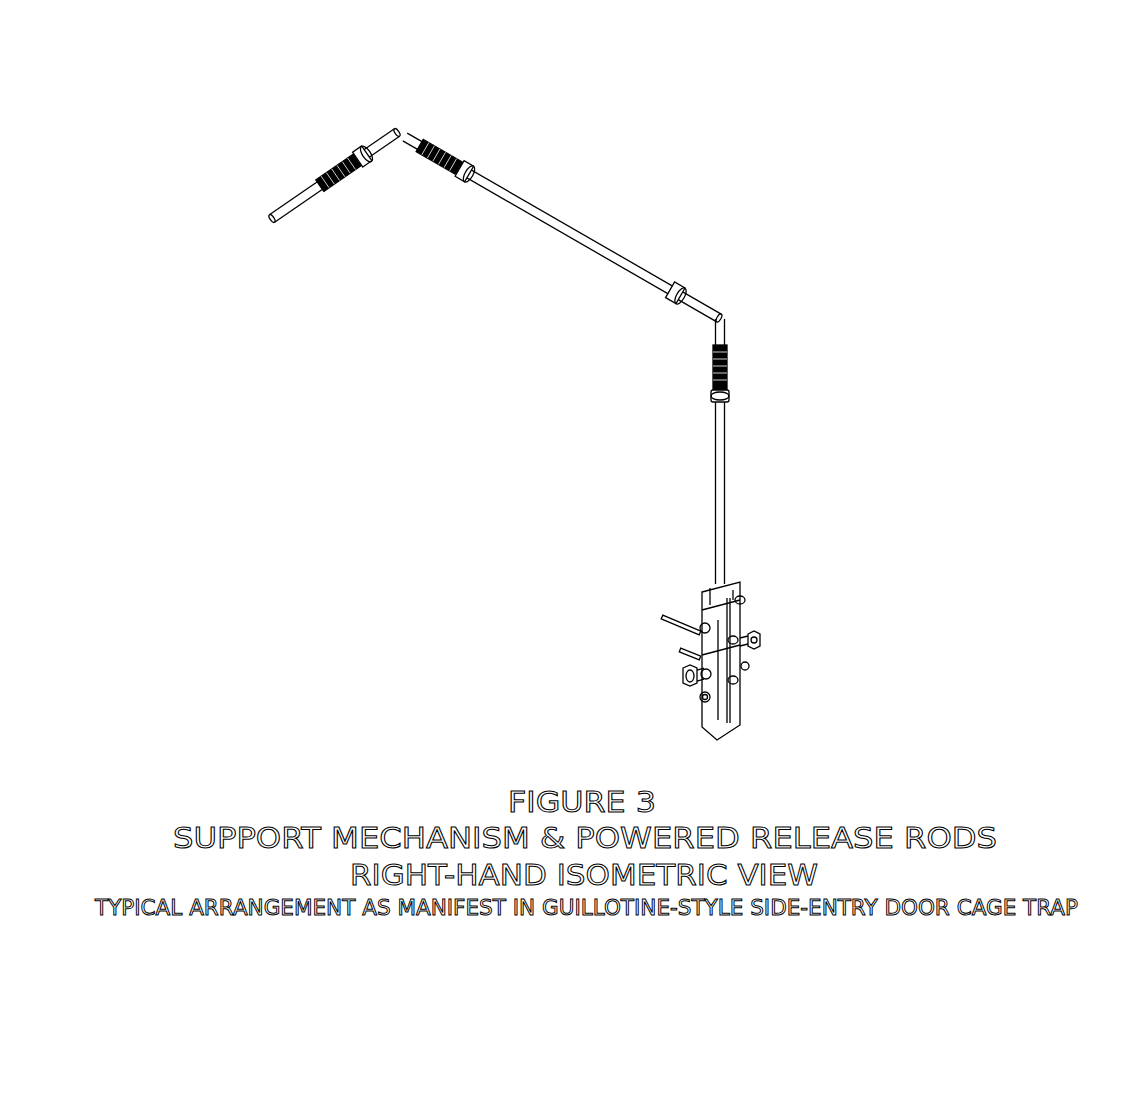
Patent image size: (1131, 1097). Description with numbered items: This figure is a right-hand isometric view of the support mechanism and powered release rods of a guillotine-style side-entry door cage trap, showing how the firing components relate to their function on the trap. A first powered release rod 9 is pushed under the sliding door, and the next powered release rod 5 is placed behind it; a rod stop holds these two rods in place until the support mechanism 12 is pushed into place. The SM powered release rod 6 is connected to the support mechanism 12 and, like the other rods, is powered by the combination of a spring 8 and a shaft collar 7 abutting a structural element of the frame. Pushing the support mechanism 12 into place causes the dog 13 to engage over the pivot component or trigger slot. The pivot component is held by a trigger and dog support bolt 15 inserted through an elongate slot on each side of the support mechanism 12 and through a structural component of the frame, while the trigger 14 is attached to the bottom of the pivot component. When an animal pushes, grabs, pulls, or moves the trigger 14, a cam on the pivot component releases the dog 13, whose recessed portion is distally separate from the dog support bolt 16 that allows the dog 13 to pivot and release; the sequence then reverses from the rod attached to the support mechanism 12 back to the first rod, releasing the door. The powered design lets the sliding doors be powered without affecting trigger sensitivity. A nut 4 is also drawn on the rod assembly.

The nut 4 is at (692, 273).
The powered release rod 5 is at (555, 201).
The SM powered release rod 6 is at (698, 501).
The shaft collar 7 is at (338, 147).
The spring 8 is at (698, 380).
The first powered release rod 9 is at (254, 224).
The support mechanism 12 is at (759, 706).
The dog 13 is at (755, 662).
The trigger 14 is at (636, 623).
The trigger and dog support bolt 15 is at (665, 673).
The dog support bolt 16 is at (678, 700).